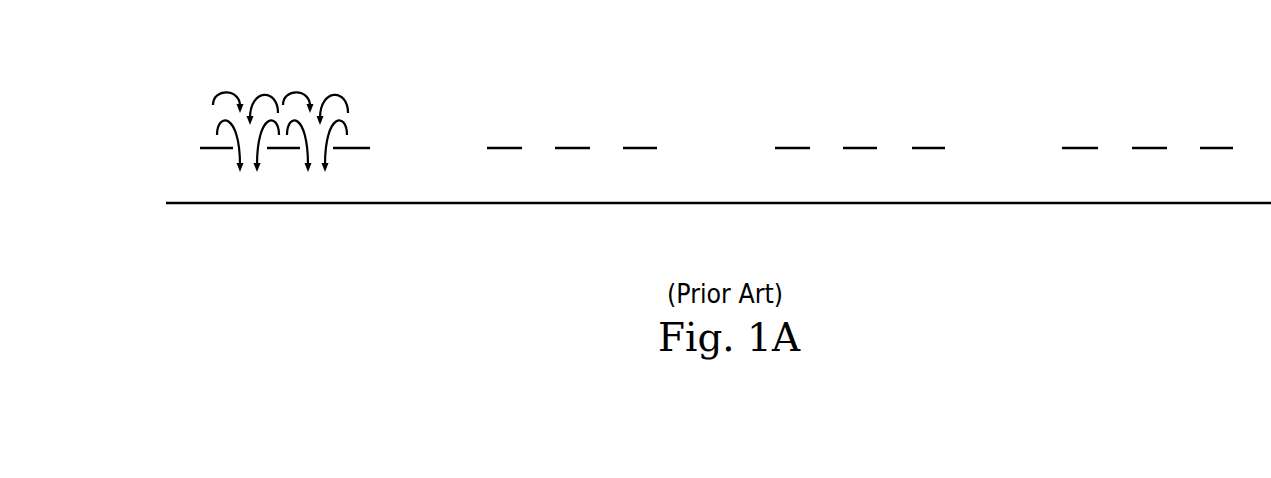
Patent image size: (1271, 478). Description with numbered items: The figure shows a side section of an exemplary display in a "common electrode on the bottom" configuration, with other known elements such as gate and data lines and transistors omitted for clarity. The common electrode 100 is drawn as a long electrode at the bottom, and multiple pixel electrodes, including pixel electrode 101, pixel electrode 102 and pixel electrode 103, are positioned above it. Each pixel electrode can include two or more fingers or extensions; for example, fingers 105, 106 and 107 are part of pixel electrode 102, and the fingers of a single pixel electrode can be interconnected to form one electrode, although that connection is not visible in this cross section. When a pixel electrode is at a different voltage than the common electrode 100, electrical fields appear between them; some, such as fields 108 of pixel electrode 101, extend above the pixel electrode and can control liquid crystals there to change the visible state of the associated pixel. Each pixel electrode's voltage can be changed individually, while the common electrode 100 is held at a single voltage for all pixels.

The common electrode 100 is at (335, 203).
The pixel electrode 101 is at (192, 136).
The pixel electrode 102 is at (565, 119).
The pixel electrode 103 is at (842, 110).
The finger 105 is at (503, 149).
The finger 106 is at (570, 149).
The finger 107 is at (637, 149).
The electrical fields 108 is at (318, 74).